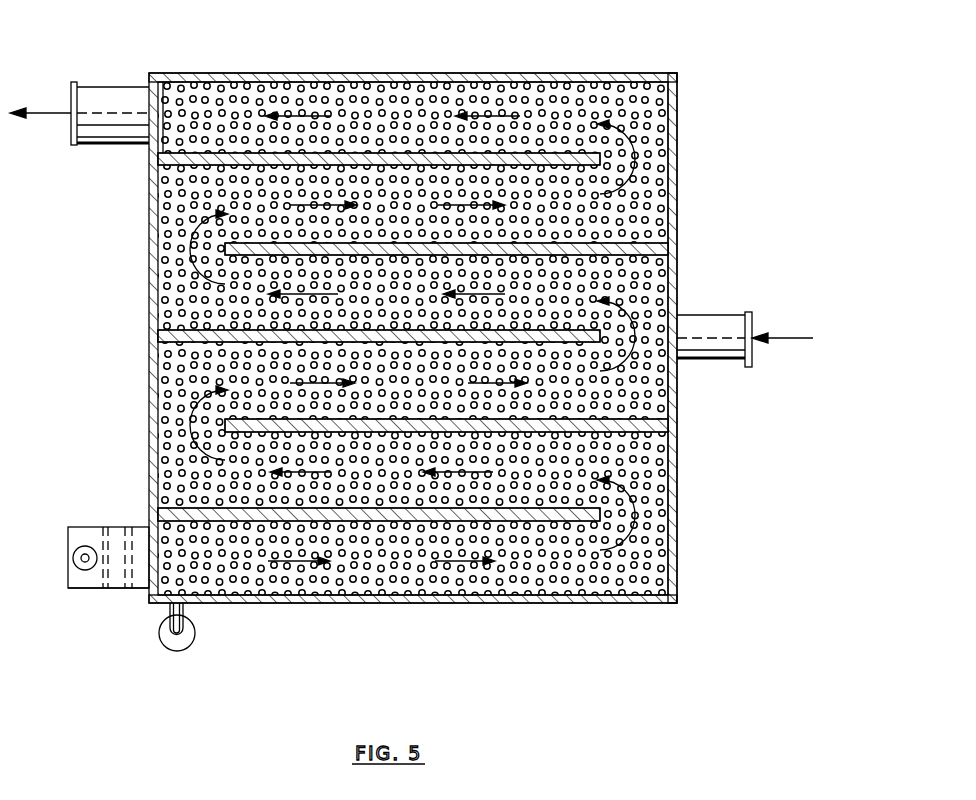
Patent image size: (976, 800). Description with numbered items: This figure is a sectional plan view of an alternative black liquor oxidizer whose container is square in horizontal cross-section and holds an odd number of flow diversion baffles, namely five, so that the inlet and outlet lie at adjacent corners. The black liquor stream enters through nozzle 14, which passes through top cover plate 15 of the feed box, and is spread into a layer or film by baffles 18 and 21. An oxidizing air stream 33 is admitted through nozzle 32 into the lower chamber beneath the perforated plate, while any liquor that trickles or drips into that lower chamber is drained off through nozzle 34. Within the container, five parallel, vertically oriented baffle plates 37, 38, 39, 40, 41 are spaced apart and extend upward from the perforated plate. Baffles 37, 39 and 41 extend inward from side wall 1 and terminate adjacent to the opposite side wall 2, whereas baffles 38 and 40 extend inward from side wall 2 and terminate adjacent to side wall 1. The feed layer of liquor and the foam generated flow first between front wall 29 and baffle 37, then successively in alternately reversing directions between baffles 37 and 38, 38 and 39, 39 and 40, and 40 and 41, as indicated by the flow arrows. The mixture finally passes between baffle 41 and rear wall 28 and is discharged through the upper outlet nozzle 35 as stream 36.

The side wall 1 is at (149, 244).
The side wall 2 is at (678, 450).
The nozzle 14 is at (85, 548).
The top cover plate 15 is at (68, 535).
The baffle 18 is at (100, 587).
The baffle 21 is at (120, 590).
The rear wall 28 is at (468, 73).
The front wall 29 is at (435, 605).
The nozzle 32 is at (697, 315).
The stream 33 is at (795, 339).
The nozzle 34 is at (188, 609).
The outlet nozzle 35 is at (107, 147).
The stream 36 is at (40, 112).
The flow diversion baffle 37 is at (375, 521).
The flow diversion baffle 38 is at (375, 432).
The flow diversion baffle 39 is at (378, 342).
The flow diversion baffle 40 is at (378, 255).
The flow diversion baffle 41 is at (378, 167).